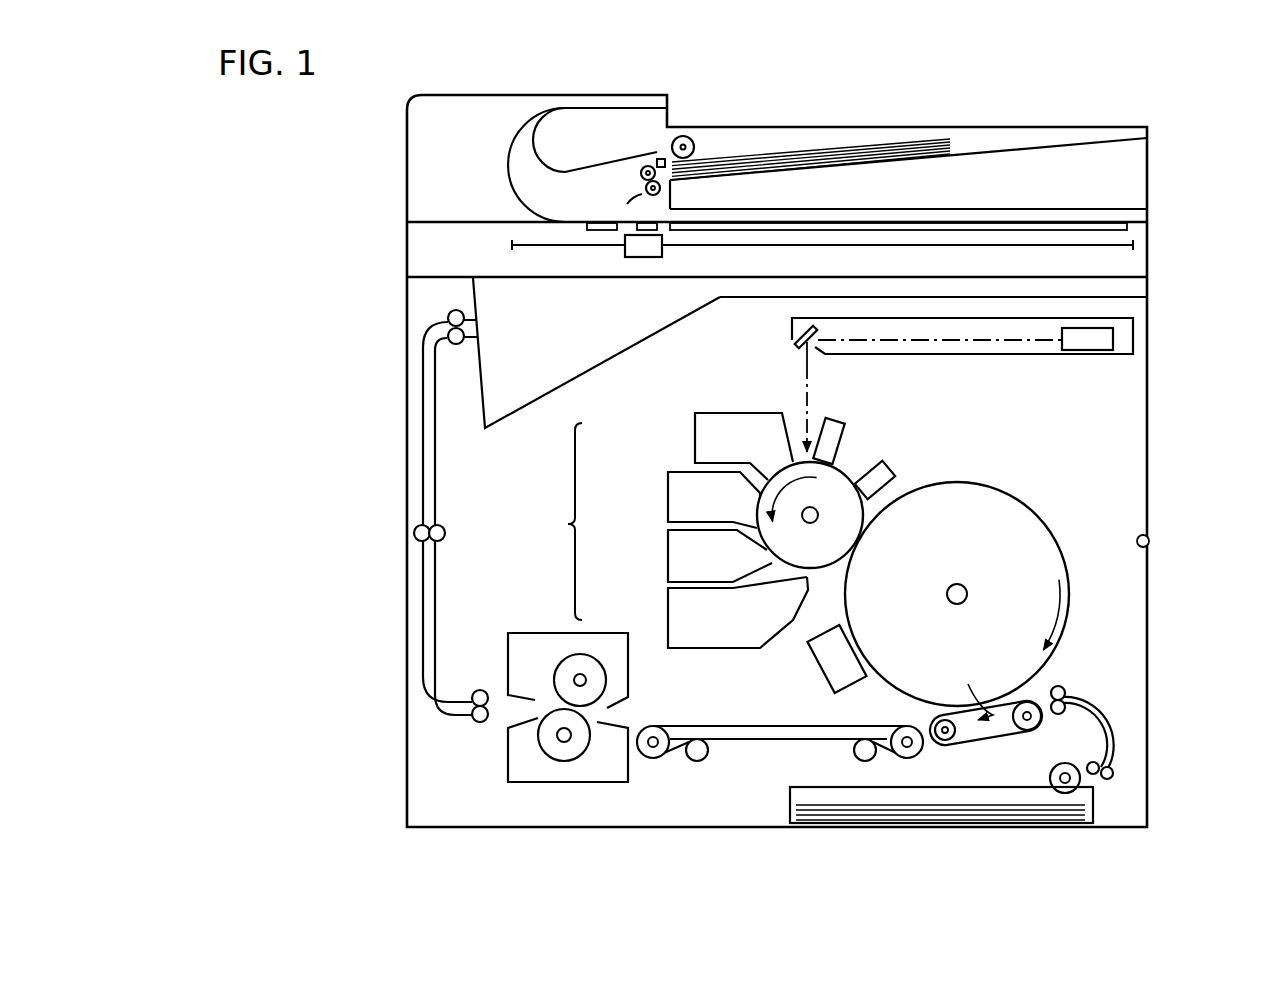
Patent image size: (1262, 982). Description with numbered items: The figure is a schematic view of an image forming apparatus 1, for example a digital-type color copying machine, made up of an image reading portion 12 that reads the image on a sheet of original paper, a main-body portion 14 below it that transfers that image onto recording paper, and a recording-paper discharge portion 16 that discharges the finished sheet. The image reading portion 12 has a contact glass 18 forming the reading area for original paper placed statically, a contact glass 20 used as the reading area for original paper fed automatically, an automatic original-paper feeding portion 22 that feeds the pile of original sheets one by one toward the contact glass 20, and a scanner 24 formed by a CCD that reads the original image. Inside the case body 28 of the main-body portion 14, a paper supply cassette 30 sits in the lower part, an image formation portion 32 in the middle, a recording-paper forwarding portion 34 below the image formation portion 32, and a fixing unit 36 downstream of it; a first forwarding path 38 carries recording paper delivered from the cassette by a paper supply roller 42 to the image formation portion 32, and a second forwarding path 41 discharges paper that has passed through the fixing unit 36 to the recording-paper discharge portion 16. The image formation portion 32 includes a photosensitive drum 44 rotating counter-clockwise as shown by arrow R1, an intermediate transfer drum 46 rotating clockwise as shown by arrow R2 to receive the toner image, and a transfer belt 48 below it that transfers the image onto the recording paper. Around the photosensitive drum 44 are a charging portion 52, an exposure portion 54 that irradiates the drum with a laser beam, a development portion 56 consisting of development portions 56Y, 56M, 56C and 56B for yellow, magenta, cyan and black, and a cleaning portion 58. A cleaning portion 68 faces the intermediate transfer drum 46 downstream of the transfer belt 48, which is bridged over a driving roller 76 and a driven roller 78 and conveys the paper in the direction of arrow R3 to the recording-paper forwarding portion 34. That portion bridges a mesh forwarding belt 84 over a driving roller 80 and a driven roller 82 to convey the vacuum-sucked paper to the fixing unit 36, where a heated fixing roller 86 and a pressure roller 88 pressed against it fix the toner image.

The image forming apparatus 1 is at (1050, 83).
The image reading portion 12 is at (1152, 192).
The main-body portion 14 is at (1152, 423).
The recording-paper discharge portion 16 is at (507, 400).
The contact glass 18 is at (850, 231).
The contact glass 20 is at (580, 224).
The automatic original-paper feeding portion 22 is at (660, 143).
The scanner 24 is at (663, 252).
The case body 28 is at (1150, 547).
The paper supply cassette 30 is at (927, 823).
The image formation portion 32 is at (945, 512).
The recording-paper forwarding portion 34 is at (780, 741).
The fixing unit 36 is at (568, 674).
The first forwarding path 38 is at (1103, 707).
The second forwarding path 41 is at (423, 480).
The paper supply roller 42 is at (1078, 777).
The photosensitive drum 44 is at (843, 475).
The intermediate transfer drum 46 is at (968, 594).
The transfer belt 48 is at (1002, 721).
The charging portion 52 is at (833, 427).
The exposure portion 54 is at (970, 355).
The development portion 56 is at (670, 530).
The development portion 56Y is at (695, 433).
The development portion 56M is at (668, 495).
The development portion 56C is at (668, 556).
The development portion 56B is at (668, 605).
The cleaning portion 58 is at (888, 473).
The cleaning portion 68 is at (815, 665).
The driving roller 76 is at (945, 740).
The driven roller 78 is at (1030, 722).
The driving roller 80 is at (657, 754).
The driven roller 82 is at (903, 757).
The mesh forwarding belt 84 is at (708, 727).
The fixing roller 86 is at (557, 682).
The pressure roller 88 is at (582, 740).
The arrow R1 is at (794, 517).
The arrow R2 is at (1030, 626).
The arrow R3 is at (970, 688).